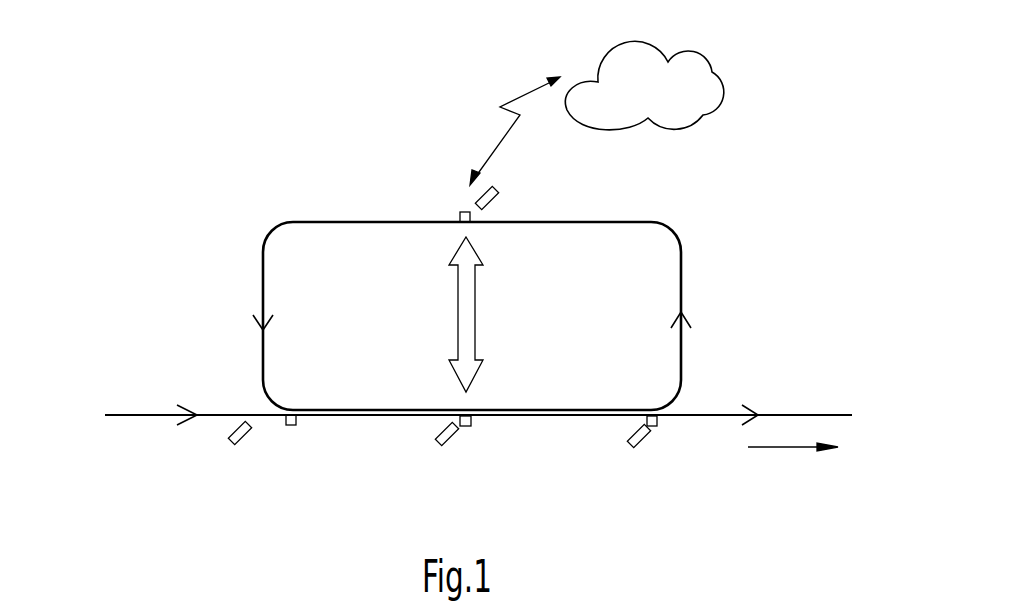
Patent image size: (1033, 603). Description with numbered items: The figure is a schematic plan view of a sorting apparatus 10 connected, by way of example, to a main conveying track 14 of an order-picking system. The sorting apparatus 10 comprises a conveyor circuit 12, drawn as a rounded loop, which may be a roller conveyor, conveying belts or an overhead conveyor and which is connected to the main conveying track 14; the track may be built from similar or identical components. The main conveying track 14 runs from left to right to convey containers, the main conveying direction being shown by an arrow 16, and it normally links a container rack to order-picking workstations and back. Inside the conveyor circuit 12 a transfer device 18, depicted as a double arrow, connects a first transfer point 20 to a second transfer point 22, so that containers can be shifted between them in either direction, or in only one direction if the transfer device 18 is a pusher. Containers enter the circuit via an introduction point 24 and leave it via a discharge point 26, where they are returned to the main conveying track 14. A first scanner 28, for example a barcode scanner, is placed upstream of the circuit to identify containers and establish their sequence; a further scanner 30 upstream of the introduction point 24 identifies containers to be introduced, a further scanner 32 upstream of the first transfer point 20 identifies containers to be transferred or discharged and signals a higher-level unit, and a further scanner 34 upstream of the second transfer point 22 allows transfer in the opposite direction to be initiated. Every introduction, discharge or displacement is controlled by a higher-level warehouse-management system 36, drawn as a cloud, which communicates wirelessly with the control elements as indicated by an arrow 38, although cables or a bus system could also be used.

The sorting apparatus 10 is at (203, 182).
The conveyor circuit 12 is at (262, 297).
The main conveying track 14 is at (148, 414).
The arrow 16 is at (792, 448).
The transfer device 18 is at (475, 313).
The first transfer point 20 is at (468, 426).
The second transfer point 22 is at (460, 218).
The introduction point 24 is at (657, 422).
The discharge point 26 is at (291, 425).
The first scanner 28 is at (233, 445).
The further scanner 30 is at (628, 443).
The further scanner 32 is at (438, 442).
The further scanner 34 is at (497, 190).
The warehouse-management system 36 is at (703, 55).
The arrow 38 is at (493, 137).